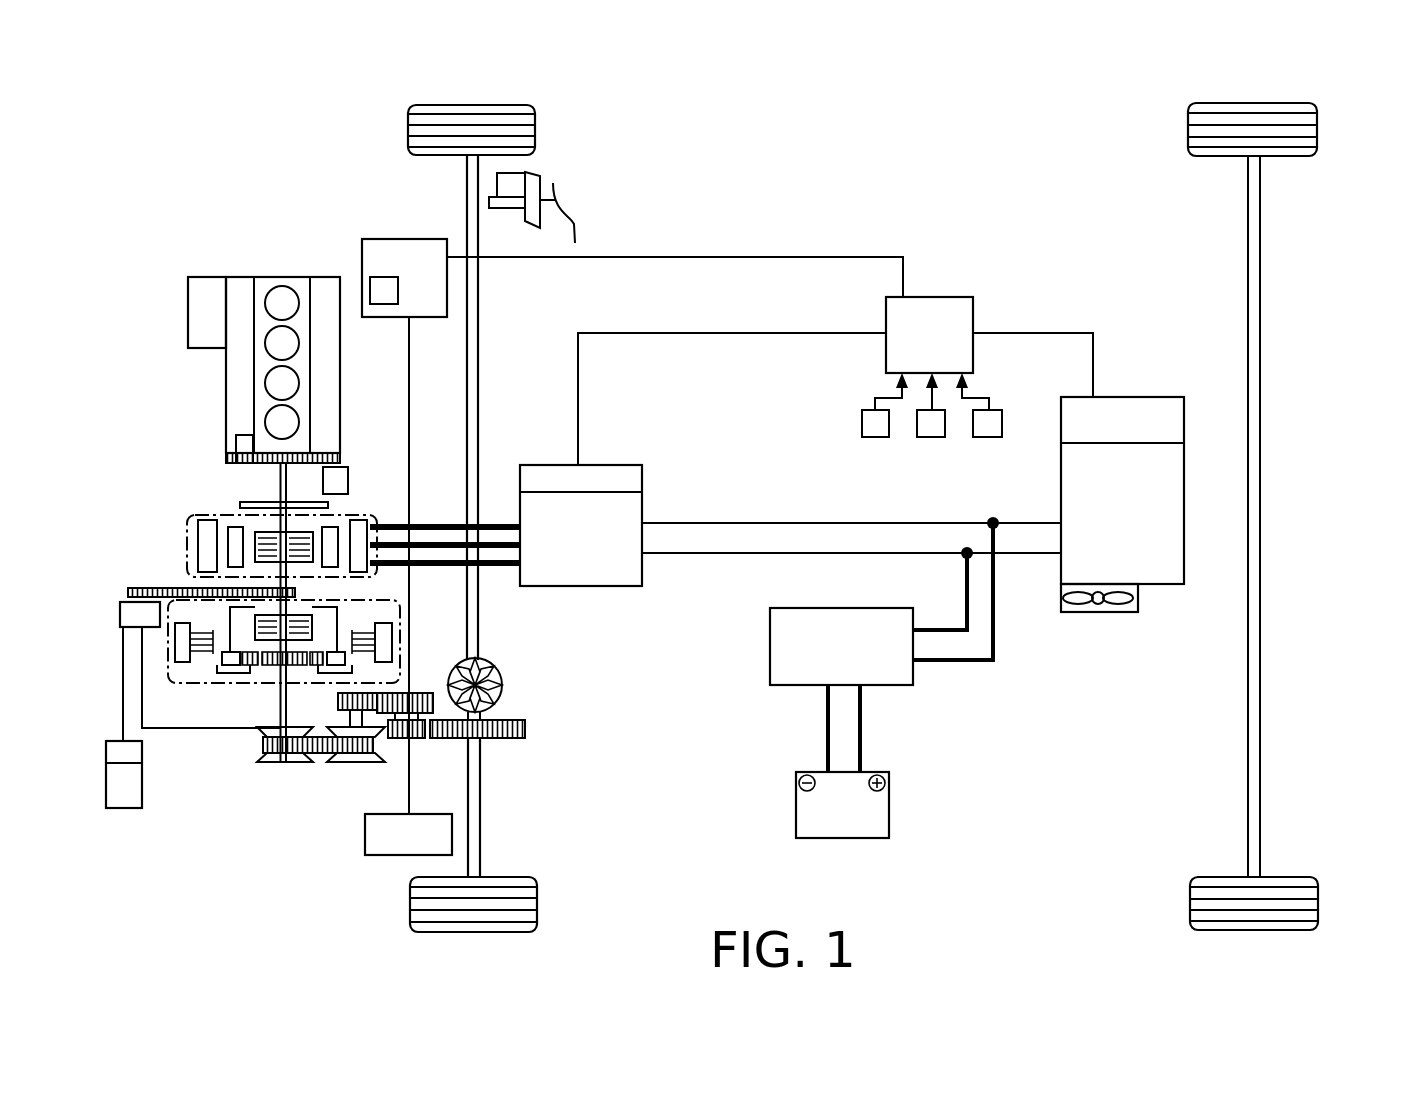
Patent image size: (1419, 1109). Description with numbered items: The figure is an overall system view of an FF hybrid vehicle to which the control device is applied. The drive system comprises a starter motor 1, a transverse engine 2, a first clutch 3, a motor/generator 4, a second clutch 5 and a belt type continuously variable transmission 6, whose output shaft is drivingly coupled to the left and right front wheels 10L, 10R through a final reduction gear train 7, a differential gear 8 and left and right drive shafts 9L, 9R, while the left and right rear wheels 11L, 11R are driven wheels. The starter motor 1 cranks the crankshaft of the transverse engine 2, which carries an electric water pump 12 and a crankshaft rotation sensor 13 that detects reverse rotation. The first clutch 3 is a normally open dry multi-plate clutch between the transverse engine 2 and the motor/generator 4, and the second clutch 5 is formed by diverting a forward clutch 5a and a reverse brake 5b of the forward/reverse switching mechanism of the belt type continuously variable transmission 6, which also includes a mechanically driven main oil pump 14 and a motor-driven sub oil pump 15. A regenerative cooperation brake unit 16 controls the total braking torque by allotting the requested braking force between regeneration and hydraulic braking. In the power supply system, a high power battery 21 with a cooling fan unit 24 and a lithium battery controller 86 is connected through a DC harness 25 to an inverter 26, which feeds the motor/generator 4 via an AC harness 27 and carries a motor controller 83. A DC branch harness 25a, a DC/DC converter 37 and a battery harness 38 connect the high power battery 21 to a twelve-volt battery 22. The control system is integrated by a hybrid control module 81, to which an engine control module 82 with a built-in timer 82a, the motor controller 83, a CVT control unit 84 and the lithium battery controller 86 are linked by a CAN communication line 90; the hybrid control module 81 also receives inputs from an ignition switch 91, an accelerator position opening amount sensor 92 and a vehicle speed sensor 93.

The starter motor 1 is at (256, 343).
The transverse engine 2 is at (302, 287).
The first clutch 3 is at (265, 541).
The motor/generator 4 is at (256, 515).
The second clutch 5 is at (310, 703).
The forward clutch 5a is at (300, 626).
The reverse brake 5b is at (200, 653).
The belt type continuously variable transmission 6 is at (283, 756).
The final reduction gear train 7 is at (428, 745).
The differential gear 8 is at (488, 680).
The left drive shaft 9L is at (480, 830).
The right drive shaft 9R is at (478, 305).
The left front wheel 10L is at (410, 905).
The right front wheel 10R is at (408, 126).
The left rear wheel 11L is at (1318, 899).
The right rear wheel 11R is at (1317, 124).
The electric water pump 12 is at (200, 284).
The crankshaft rotation sensor 13 is at (237, 447).
The main oil pump 14 is at (132, 615).
The sub oil pump 15 is at (126, 783).
The regenerative cooperation brake unit 16 is at (532, 181).
The high power battery 21 is at (1145, 445).
The 12V battery 22 is at (811, 825).
The cooling fan unit 24 is at (1098, 605).
The DC harness 25 is at (718, 540).
The DC branch harness 25a is at (1000, 640).
The inverter 26 is at (576, 534).
The AC harness 27 is at (447, 526).
The DC/DC converter 37 is at (770, 672).
The battery harness 38 is at (830, 725).
The hybrid control module 81 is at (932, 297).
The engine control module 82 is at (396, 273).
The timer 82a is at (385, 305).
The motor controller 83 is at (543, 465).
The CVT control unit 84 is at (365, 840).
The lithium battery controller 86 is at (1170, 418).
The CAN communication line 90 is at (848, 336).
The ignition switch 91 is at (875, 437).
The accelerator position opening amount sensor 92 is at (930, 437).
The vehicle speed sensor 93 is at (985, 437).